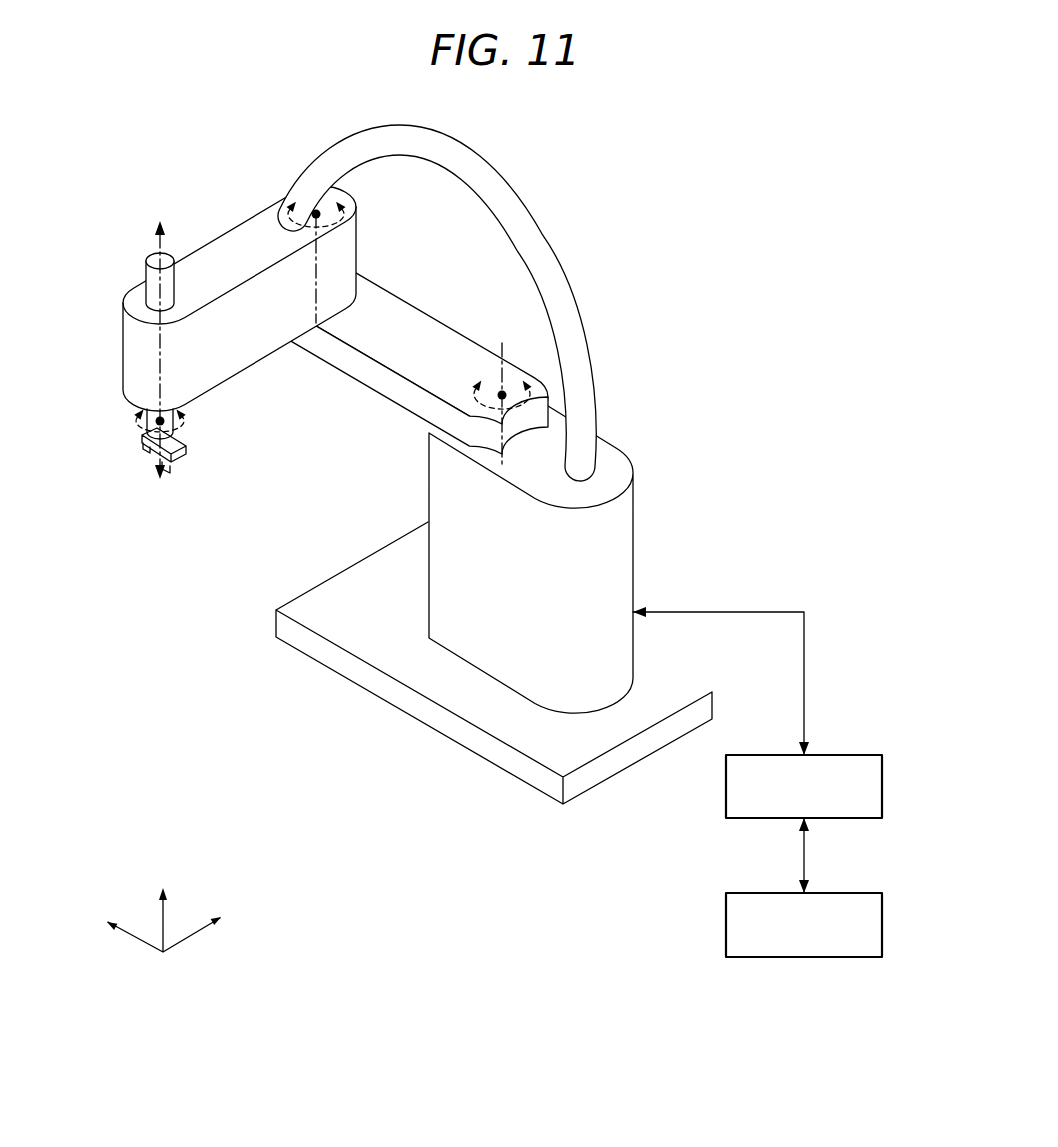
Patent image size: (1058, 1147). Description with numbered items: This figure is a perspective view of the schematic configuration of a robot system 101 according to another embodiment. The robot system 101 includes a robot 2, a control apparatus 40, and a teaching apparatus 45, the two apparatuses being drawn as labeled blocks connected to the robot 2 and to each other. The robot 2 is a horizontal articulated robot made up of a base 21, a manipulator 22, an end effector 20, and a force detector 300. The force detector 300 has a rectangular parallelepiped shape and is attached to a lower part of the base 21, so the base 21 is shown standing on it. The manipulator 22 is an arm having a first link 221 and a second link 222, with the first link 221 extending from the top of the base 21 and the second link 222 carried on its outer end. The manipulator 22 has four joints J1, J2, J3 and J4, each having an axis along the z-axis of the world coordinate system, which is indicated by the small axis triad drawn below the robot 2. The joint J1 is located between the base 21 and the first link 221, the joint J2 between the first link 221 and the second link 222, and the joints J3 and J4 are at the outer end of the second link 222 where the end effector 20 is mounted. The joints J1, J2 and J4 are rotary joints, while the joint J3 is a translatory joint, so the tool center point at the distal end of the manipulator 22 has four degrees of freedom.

The robot system 101 is at (501, 546).
The robot 2 is at (374, 426).
The base 21 is at (625, 542).
The manipulator 22 is at (335, 320).
The first link 221 is at (377, 340).
The second link 222 is at (247, 343).
The end effector 20 is at (147, 450).
The force detector 300 is at (357, 633).
The control apparatus 40 is at (882, 784).
The teaching apparatus 45 is at (882, 922).
The joint J1 is at (477, 400).
The joint J2 is at (357, 213).
The joint J3 is at (153, 337).
The joint J4 is at (193, 427).